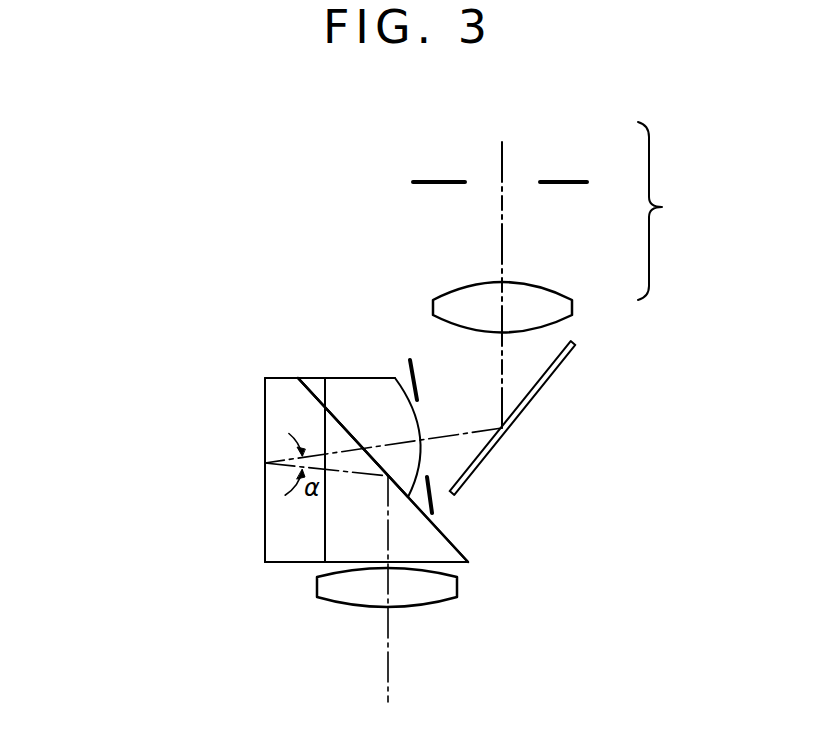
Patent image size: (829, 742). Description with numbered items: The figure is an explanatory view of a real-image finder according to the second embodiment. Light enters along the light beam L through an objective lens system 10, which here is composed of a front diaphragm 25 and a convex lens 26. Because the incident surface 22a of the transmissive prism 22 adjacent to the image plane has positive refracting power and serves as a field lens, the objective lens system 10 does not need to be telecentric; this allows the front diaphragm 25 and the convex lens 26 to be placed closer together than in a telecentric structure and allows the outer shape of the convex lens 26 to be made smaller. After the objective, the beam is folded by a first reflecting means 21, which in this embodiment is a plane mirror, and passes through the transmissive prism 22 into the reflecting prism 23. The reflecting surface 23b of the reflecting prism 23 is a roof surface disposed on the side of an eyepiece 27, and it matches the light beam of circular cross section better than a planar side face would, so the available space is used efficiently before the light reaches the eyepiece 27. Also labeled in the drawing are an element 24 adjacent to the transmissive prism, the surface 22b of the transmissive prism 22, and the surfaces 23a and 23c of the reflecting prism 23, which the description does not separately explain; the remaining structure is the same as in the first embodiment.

The light beam / optical axis L is at (503, 157).
The objective lens system 10 is at (669, 211).
The first reflecting means 21 is at (563, 371).
The transmissive prism 22 is at (363, 397).
The incident surface 22a is at (418, 413).
The flat surface of lens 22b is at (317, 390).
The reflecting prism 23 is at (360, 501).
The inclined surface of prism 23a is at (438, 525).
The reflecting surface 23b is at (265, 522).
The bottom surface of prism 23c is at (460, 565).
The stop 24 is at (417, 398).
The front diaphragm 25 is at (568, 182).
The convex lens 26 is at (545, 300).
The eyepiece 27 is at (440, 590).